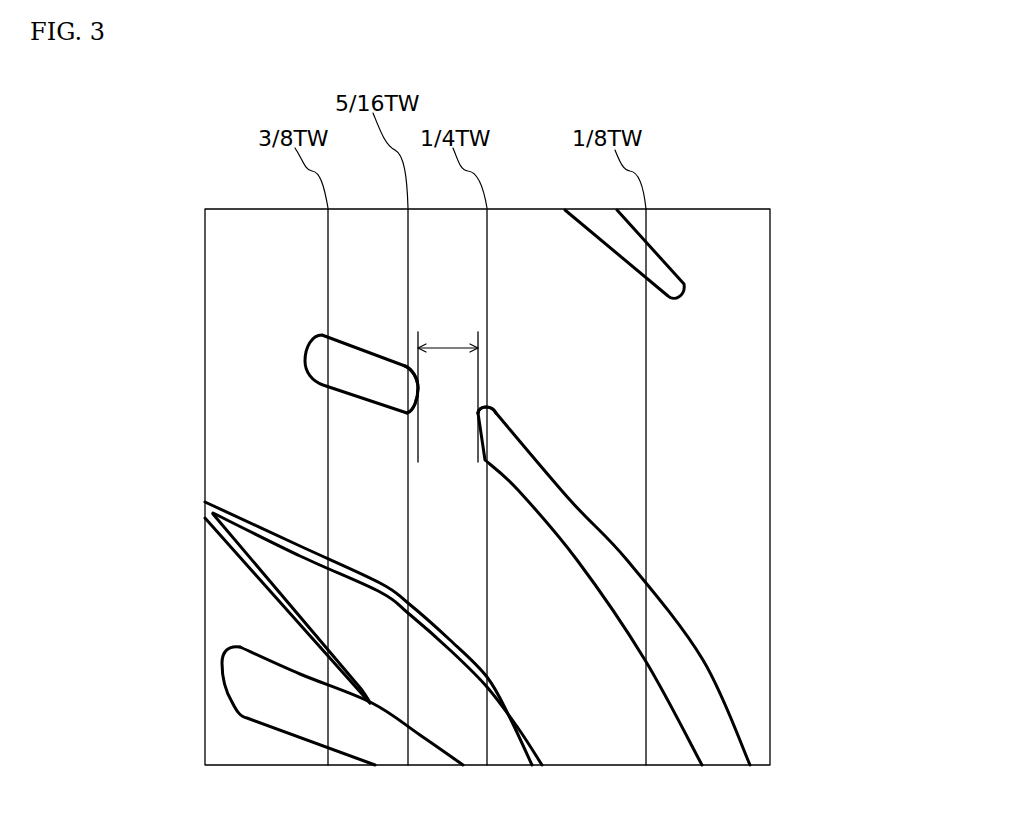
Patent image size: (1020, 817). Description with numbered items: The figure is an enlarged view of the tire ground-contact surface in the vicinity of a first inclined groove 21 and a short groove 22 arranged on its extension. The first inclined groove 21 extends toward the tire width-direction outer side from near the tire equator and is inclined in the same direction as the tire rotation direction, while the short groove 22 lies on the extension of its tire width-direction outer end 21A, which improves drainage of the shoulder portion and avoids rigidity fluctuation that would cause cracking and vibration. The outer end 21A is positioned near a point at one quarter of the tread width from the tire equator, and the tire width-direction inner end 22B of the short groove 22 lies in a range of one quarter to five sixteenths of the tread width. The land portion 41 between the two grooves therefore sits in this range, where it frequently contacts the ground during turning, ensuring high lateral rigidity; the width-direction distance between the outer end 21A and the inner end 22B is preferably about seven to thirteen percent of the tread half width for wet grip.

The first inclined groove 21 is at (600, 543).
The tire width-direction outer end of the first inclined groove 21A is at (487, 398).
The short groove 22 is at (323, 353).
The tire width-direction inner end of the short groove 22B is at (405, 422).
The land portion 41 is at (450, 457).